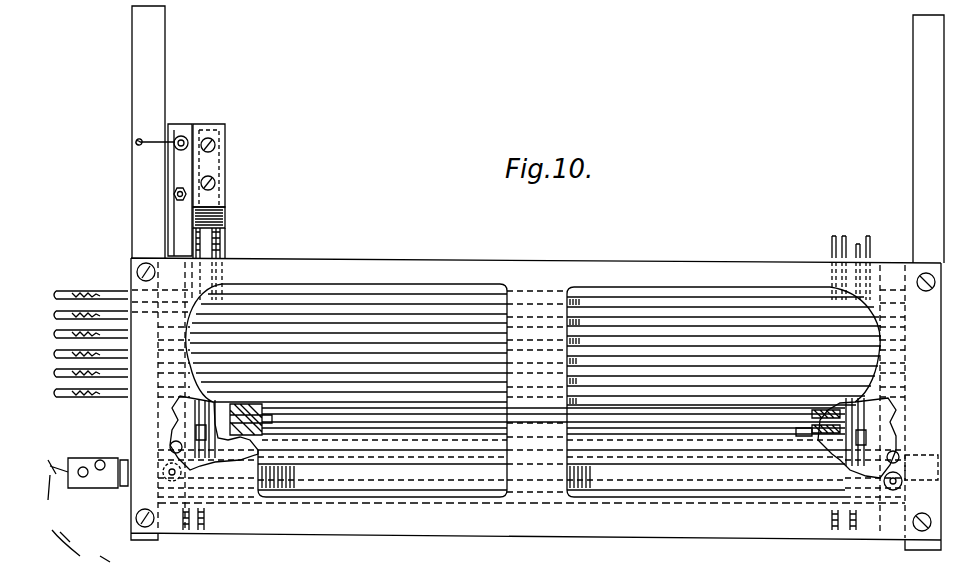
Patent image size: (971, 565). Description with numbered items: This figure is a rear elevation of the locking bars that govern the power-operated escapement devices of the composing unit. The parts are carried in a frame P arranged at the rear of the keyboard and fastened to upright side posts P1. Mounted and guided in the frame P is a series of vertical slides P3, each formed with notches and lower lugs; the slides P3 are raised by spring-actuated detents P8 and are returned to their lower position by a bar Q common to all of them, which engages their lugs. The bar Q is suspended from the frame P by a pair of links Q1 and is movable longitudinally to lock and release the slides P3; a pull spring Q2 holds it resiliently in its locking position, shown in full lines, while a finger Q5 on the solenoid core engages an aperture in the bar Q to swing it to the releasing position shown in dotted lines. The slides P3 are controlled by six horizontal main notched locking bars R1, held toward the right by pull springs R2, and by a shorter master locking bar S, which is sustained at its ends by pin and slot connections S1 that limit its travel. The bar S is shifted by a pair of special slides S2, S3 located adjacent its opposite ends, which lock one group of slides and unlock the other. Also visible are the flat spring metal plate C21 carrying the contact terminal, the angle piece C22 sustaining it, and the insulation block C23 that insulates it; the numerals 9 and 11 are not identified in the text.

The frame P is at (488, 262).
The upright side post P1 is at (162, 126).
The vertical slide P3 is at (222, 256).
The spring-actuated detent P8 is at (184, 520).
The flat spring metal plate C21 is at (178, 218).
The angle piece C22 is at (226, 216).
The insulation block C23 is at (224, 174).
The master or auxiliary notched locking bar S is at (322, 424).
The pin and slot connection S1 is at (804, 426).
The special slide S2 is at (198, 430).
The special slide S3 is at (208, 254).
The main notched locking bar R1 is at (630, 298).
The pull spring R2 is at (91, 343).
The bar Q is at (400, 462).
The link Q1 is at (170, 447).
The pull spring Q2 is at (79, 518).
The finger Q5 is at (98, 460).
The pin 9 is at (86, 478).
The carriage end bearing 11 is at (200, 396).